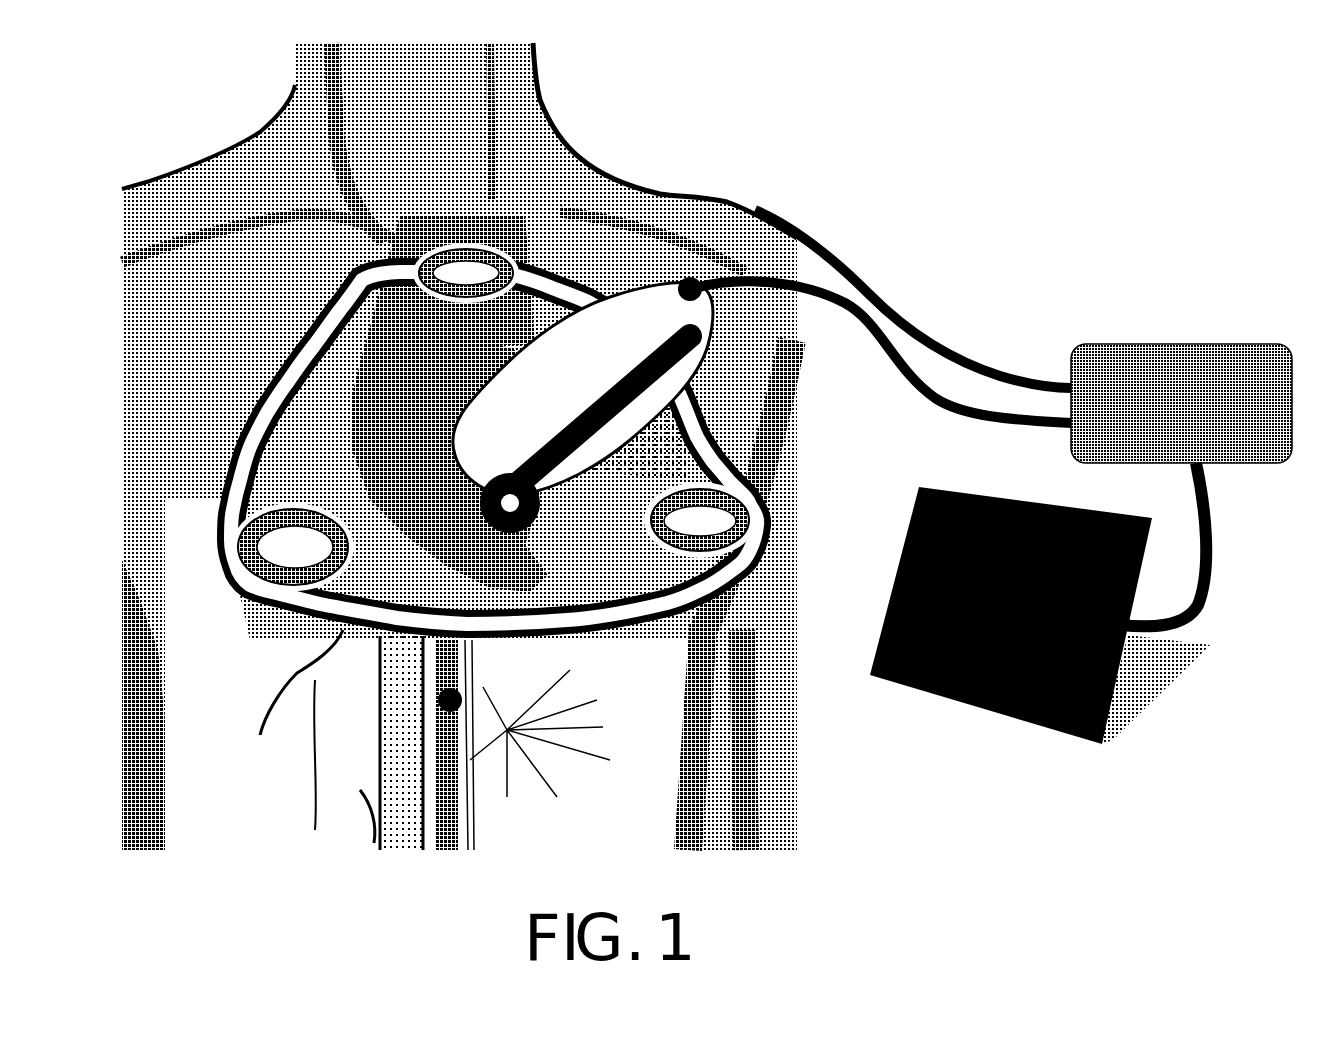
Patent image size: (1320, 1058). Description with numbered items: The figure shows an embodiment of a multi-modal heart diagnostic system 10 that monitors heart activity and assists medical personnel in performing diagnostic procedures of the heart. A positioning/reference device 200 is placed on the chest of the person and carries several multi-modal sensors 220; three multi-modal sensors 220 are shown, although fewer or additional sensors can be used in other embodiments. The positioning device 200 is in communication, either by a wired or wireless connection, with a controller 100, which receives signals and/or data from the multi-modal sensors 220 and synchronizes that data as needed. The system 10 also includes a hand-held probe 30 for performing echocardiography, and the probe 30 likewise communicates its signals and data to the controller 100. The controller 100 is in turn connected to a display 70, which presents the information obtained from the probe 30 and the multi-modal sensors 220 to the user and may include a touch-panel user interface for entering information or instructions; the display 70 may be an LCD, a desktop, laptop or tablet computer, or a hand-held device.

The system 10 is at (1037, 195).
The hand-held probe 30 is at (573, 395).
The display 70 is at (1033, 718).
The controller 100 is at (1178, 343).
The positioning/reference device 200 is at (237, 593).
The multi-modal sensors 220 is at (288, 535).